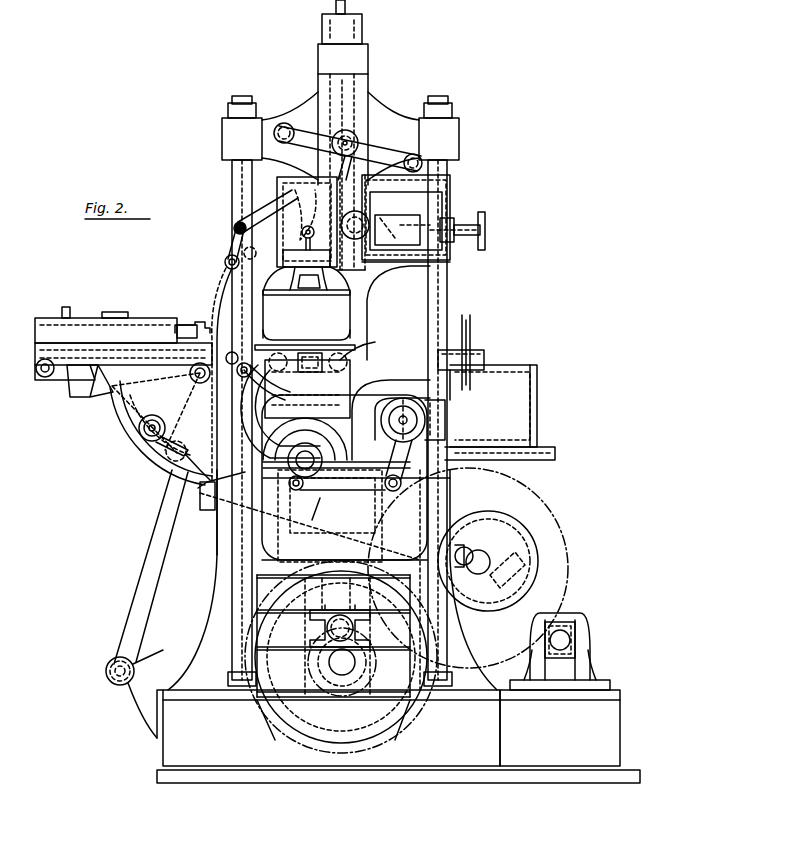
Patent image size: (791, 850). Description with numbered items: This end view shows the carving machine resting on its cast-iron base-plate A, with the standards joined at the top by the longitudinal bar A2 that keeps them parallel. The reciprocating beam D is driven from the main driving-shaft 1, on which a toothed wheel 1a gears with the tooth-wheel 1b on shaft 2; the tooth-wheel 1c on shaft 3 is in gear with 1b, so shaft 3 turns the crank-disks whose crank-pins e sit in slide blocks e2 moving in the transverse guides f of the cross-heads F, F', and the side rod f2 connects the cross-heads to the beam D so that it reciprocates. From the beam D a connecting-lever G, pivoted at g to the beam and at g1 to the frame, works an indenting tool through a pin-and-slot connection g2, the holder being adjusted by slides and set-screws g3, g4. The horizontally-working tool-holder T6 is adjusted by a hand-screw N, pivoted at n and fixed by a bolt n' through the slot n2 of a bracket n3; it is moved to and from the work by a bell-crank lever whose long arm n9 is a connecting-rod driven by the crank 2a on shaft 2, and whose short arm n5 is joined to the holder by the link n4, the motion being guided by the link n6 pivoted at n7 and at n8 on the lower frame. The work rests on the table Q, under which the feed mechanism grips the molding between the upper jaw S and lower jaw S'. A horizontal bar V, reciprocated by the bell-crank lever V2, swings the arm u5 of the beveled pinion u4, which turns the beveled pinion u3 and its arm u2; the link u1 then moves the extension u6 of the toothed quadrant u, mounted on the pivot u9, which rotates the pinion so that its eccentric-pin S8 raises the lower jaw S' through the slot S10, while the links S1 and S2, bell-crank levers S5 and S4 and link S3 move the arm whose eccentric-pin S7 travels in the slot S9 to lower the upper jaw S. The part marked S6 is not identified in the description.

The base-plate A is at (398, 736).
The longitudinal bar A2 is at (336, 28).
The reciprocating beam D is at (299, 111).
The connecting-lever G is at (350, 153).
The pivot g is at (284, 122).
The pivot g1 is at (412, 154).
The pin-and-slot connection g2 is at (356, 140).
The slide and set-screw g3 is at (403, 230).
The slide and set-screw g4 is at (457, 223).
The side rod f2 is at (236, 205).
The eccentric-pin S7 is at (282, 194).
The link S3 is at (282, 206).
The bell-crank lever S4 is at (236, 234).
The link S2 is at (232, 272).
The slot S9 is at (257, 254).
The lower gripping-plate S' is at (306, 303).
The link S1 is at (286, 344).
The table Q is at (308, 350).
The upper gripping-plate S is at (307, 369).
The slot S10 is at (385, 363).
The bell-crank lever S5 is at (227, 351).
The pivot S6 is at (242, 378).
The eccentric-pin S8 is at (262, 395).
The hand-screw N is at (138, 320).
The tool-holder T6 is at (192, 315).
The link n4 is at (90, 381).
The pivot n is at (193, 372).
The short arm n5 is at (161, 429).
The slot n2 is at (166, 432).
The bolt n' is at (156, 449).
The bracket n3 is at (167, 458).
The pivot n7 is at (180, 470).
The extension u6 is at (249, 437).
The guiding-link n6 is at (151, 567).
The pivot n8 is at (106, 670).
The long arm n9 is at (310, 526).
The pivot u9 is at (344, 478).
The toothed quadrant u is at (348, 458).
The link u1 is at (358, 480).
The arm u2 is at (385, 478).
The beveled pinion u3 is at (405, 398).
The beveled pinion u4 is at (416, 408).
The arm u5 is at (440, 398).
The horizontal bar V is at (475, 356).
The bell-crank lever V2 is at (528, 400).
The cross-head F is at (338, 583).
The cross-head F' is at (341, 657).
The tooth-wheel 1c is at (300, 736).
The transverse guide f is at (333, 628).
The crank-pin e is at (344, 616).
The slide block e2 is at (372, 628).
The shaft 3 is at (342, 662).
The crank 2a is at (480, 548).
The shaft 2 is at (478, 562).
The toothed wheel 1a is at (548, 613).
The main driving-shaft 1 is at (560, 640).
The tooth-wheel 1b is at (562, 553).